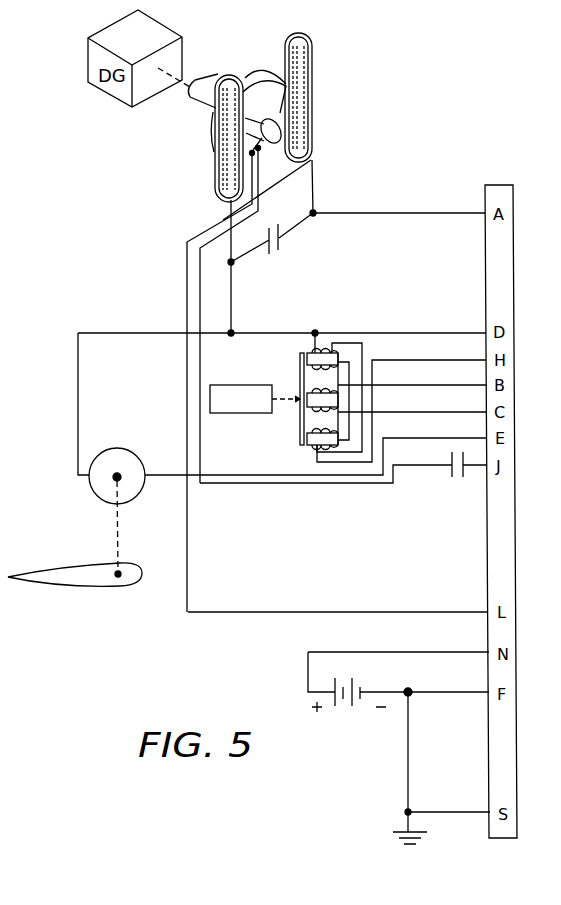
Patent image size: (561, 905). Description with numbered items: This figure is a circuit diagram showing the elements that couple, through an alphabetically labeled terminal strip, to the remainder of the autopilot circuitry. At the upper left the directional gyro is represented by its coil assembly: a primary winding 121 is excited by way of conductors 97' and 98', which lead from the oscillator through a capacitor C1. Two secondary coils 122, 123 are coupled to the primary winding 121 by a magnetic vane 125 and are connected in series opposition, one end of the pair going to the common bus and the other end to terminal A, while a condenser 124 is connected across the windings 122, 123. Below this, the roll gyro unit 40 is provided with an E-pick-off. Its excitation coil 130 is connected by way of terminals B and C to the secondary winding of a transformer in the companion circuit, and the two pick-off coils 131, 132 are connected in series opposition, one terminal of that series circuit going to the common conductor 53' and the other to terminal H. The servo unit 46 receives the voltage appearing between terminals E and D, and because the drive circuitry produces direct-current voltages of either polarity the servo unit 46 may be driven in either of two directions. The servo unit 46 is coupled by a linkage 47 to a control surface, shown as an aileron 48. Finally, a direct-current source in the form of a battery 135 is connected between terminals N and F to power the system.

The primary winding 121 is at (259, 71).
The magnetic vane 125 is at (283, 88).
The secondary coil 123 is at (313, 137).
The secondary coil 122 is at (216, 190).
The condenser 124 is at (283, 247).
The roll gyro unit 40 is at (348, 380).
The common conductor 53' is at (282, 322).
The coil 131 is at (314, 370).
The excitation coil 130 is at (314, 410).
The coil 132 is at (313, 434).
The servo unit 46 is at (142, 460).
The linkage 47 is at (114, 536).
The aileron 48 is at (85, 578).
The conductor 97' is at (326, 487).
The capacitor C1 is at (454, 474).
The conductor 98' is at (338, 600).
The battery 135 is at (358, 708).